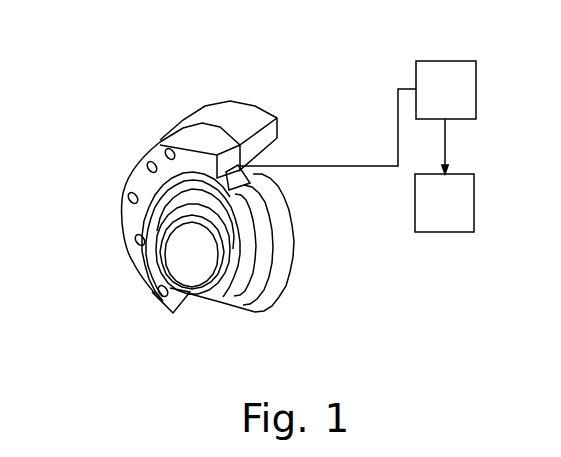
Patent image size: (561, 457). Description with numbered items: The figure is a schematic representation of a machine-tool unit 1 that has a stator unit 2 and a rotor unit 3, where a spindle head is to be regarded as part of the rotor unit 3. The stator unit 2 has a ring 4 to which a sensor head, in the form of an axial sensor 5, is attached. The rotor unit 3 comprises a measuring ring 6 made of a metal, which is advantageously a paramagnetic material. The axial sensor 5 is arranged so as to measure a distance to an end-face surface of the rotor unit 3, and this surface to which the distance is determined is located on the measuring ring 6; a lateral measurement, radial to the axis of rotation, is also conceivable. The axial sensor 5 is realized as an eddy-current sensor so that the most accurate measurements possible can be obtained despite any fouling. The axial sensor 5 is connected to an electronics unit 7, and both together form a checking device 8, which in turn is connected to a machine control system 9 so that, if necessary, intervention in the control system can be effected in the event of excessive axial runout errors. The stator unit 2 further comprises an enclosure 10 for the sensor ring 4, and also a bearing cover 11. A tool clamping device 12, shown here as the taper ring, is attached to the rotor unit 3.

The machine-tool unit 1 is at (243, 95).
The stator unit 2 is at (117, 192).
The rotor unit 3 is at (235, 314).
The ring 4 is at (252, 147).
The axial sensor 5 is at (262, 180).
The measuring ring 6 is at (298, 239).
The electronics unit 7 is at (438, 96).
The checking device 8 is at (406, 77).
The machine control system 9 is at (438, 212).
The enclosure 10 is at (160, 130).
The bearing cover 11 is at (181, 115).
The tool clamping device 12 is at (149, 221).